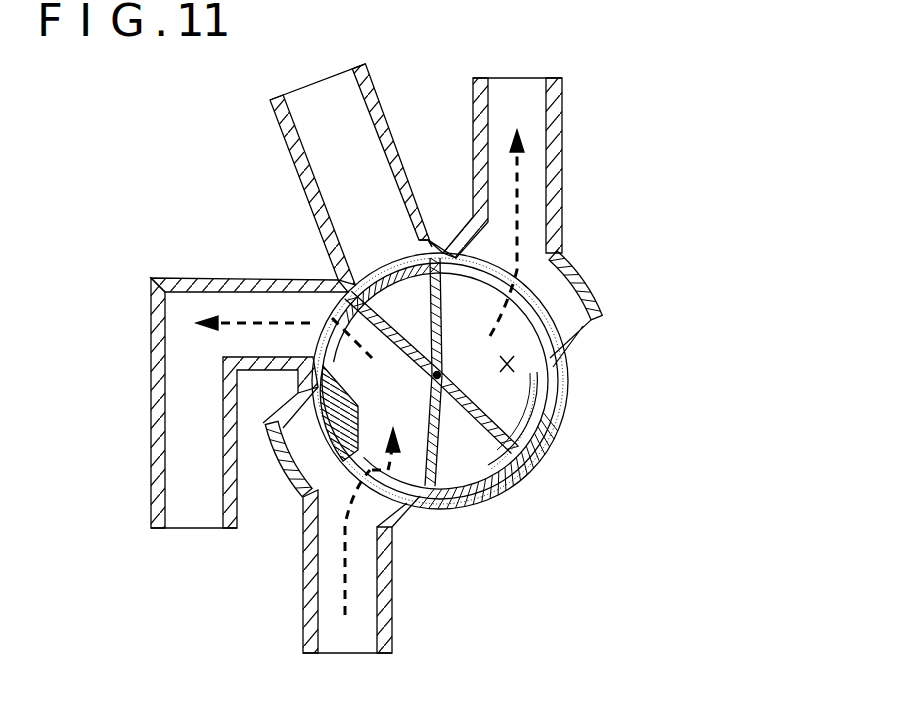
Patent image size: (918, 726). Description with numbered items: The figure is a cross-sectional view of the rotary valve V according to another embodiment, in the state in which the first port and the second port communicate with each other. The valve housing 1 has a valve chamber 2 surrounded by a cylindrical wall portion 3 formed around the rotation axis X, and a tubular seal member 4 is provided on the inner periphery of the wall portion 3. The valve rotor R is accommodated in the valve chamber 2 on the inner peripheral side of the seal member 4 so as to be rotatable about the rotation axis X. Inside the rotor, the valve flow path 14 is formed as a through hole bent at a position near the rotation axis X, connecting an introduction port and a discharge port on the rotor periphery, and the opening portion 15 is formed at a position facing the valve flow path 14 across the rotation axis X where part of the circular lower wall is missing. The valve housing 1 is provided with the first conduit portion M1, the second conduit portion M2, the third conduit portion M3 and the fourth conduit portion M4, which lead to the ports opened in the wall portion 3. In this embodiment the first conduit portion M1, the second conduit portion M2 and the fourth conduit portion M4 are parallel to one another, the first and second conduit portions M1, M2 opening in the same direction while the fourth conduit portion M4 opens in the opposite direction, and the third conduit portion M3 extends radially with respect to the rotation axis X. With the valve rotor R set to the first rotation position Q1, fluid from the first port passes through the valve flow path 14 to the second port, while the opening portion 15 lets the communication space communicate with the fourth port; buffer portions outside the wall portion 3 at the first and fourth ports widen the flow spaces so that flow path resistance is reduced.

The valve housing 1 is at (540, 298).
The valve chamber 2 is at (537, 295).
The wall portion 3 is at (548, 418).
The seal member 4 is at (535, 392).
The valve flow path 14 is at (405, 413).
The opening portion 15 is at (530, 440).
The first conduit portion M1 is at (303, 615).
The second conduit portion M2 is at (151, 440).
The third conduit portion M3 is at (298, 178).
The fourth conduit portion M4 is at (562, 142).
The valve rotor R is at (308, 460).
The first rotation position Q1 is at (408, 420).
The rotation axis X is at (440, 376).
The rotary valve V is at (705, 150).